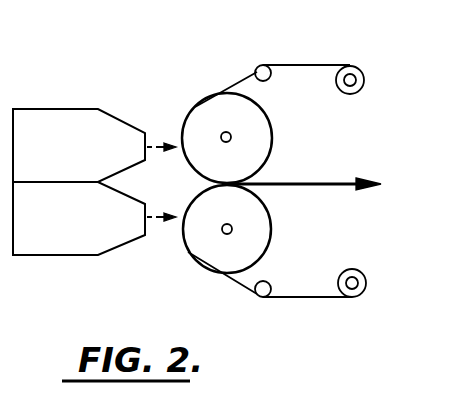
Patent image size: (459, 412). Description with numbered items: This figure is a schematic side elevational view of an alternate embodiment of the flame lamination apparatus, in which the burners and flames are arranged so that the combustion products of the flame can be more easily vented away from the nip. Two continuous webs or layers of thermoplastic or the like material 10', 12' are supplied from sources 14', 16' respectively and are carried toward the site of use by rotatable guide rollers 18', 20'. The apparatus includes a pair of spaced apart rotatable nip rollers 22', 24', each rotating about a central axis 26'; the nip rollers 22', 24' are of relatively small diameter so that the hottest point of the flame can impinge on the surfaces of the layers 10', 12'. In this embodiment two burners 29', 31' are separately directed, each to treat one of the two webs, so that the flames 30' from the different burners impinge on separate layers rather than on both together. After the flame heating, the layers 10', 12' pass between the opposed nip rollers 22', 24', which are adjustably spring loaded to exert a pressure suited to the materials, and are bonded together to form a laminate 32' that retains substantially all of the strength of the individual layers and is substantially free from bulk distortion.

The burner 29' is at (79, 120).
The burner 31' is at (78, 242).
The flame 30' is at (144, 187).
The nip roller 22' is at (227, 97).
The nip roller 24' is at (220, 243).
The central axis 26' is at (278, 178).
The layer of thermoplastic material 12' is at (272, 68).
The layer of thermoplastic material 10' is at (270, 273).
The guide roller 20' is at (283, 46).
The source of thermoplastic material 16' is at (354, 53).
The guide roller 18' is at (281, 306).
The source of thermoplastic material 14' is at (349, 302).
The laminate 32' is at (305, 171).